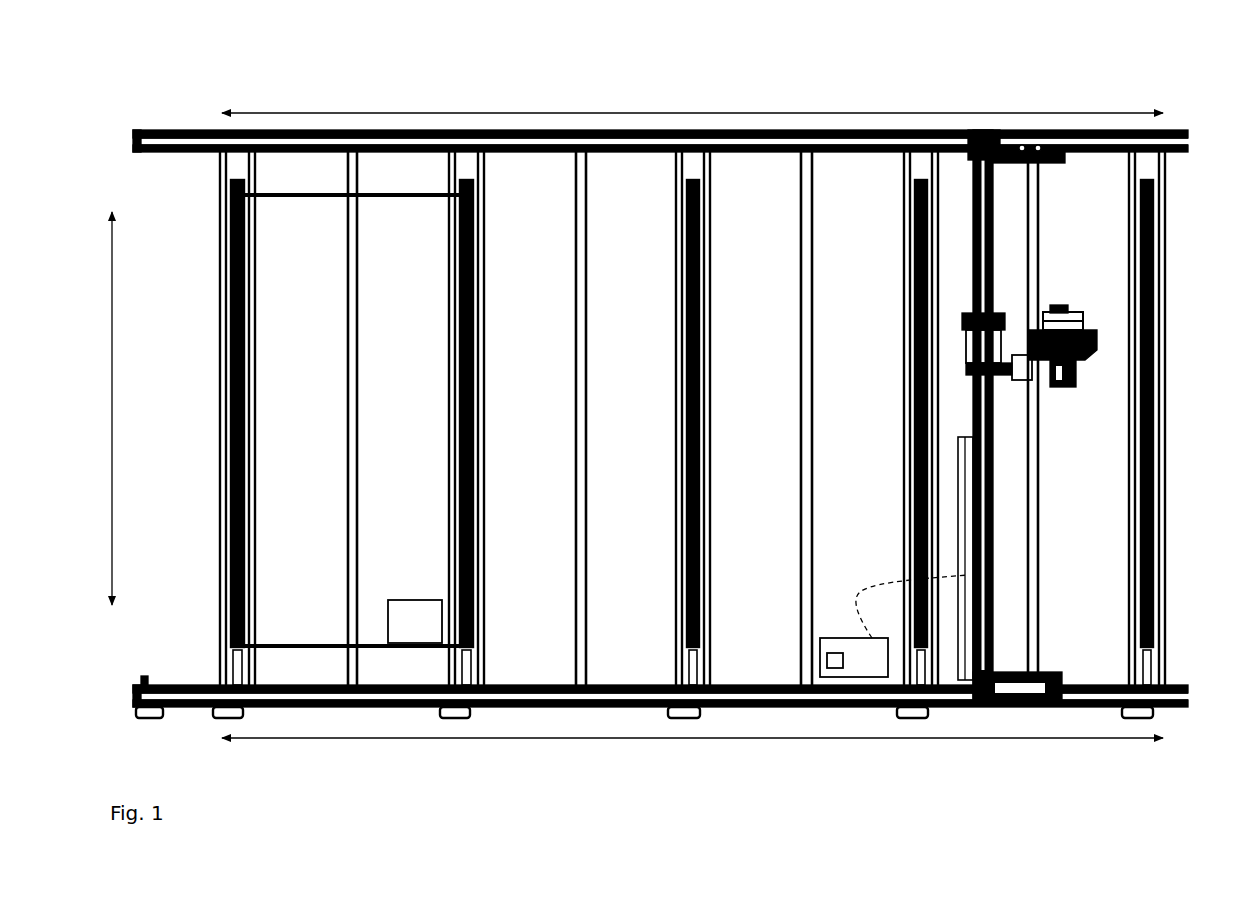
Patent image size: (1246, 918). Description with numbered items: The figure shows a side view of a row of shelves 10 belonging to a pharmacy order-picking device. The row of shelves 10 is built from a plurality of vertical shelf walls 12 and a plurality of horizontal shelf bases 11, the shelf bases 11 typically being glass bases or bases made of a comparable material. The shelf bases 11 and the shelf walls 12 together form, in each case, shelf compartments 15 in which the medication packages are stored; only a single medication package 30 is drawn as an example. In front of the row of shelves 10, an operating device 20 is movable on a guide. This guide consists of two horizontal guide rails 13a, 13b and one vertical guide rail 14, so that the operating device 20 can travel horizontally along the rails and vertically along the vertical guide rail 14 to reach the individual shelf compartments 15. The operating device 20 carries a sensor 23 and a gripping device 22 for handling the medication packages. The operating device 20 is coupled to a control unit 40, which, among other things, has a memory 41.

The row of shelves 10 is at (891, 95).
The horizontal shelf base 11 is at (428, 193).
The vertical shelf wall 12 is at (255, 168).
The horizontal guide rail 13a is at (187, 695).
The horizontal guide rail 13b is at (186, 130).
The vertical guide rail 14 is at (995, 213).
The shelf compartment 15 is at (402, 182).
The operating device 20 is at (1112, 330).
The gripping device 22 is at (1072, 305).
The sensor 23 is at (1065, 387).
The medication package 30 is at (428, 627).
The control unit 40 is at (853, 677).
The memory 41 is at (835, 668).